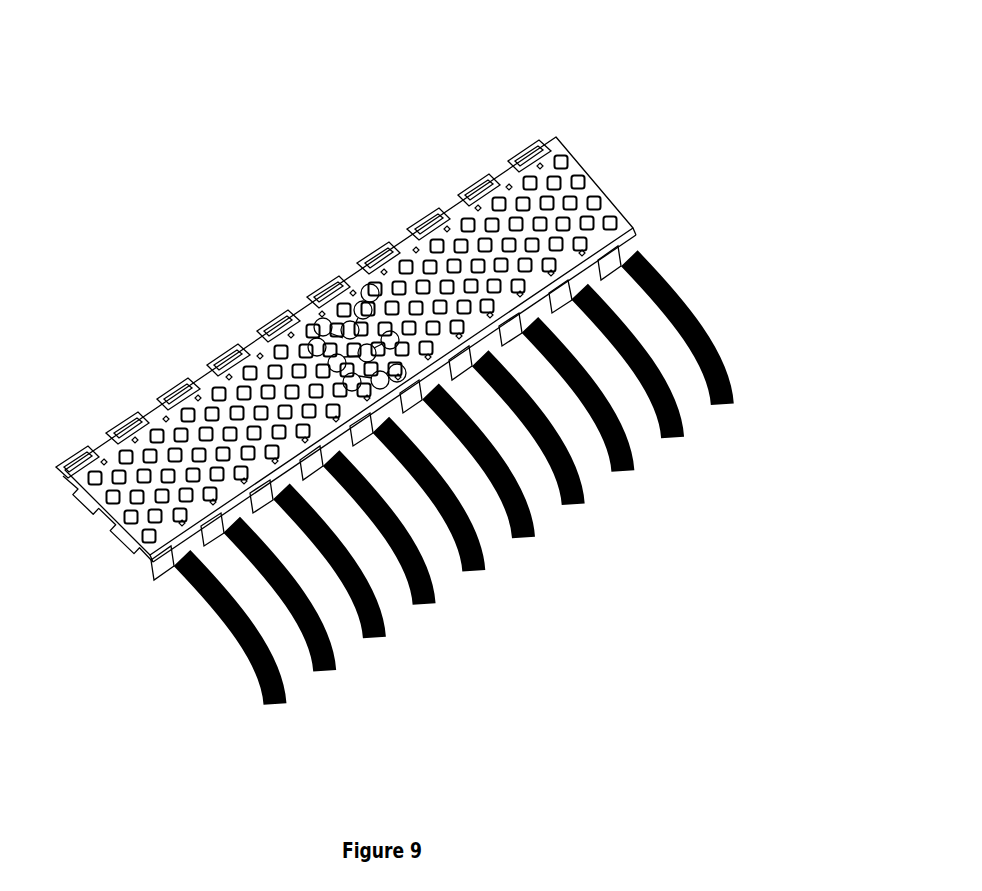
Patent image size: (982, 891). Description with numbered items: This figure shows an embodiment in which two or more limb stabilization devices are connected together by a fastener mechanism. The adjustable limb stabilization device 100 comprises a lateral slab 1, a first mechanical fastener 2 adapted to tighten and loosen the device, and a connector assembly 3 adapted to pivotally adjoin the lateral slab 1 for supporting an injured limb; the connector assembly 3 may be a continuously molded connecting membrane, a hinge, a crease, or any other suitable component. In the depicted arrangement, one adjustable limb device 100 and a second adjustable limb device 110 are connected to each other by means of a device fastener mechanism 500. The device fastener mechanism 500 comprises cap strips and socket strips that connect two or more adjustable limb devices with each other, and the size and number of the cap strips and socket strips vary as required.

The lateral slab 1 is at (614, 200).
The first mechanical fastener 2 is at (238, 350).
The connector assembly 3 is at (215, 621).
The adjustable limb stabilization device 100 is at (267, 97).
The second adjustable limb device 110 is at (438, 278).
The device fastener mechanism 500 is at (344, 322).